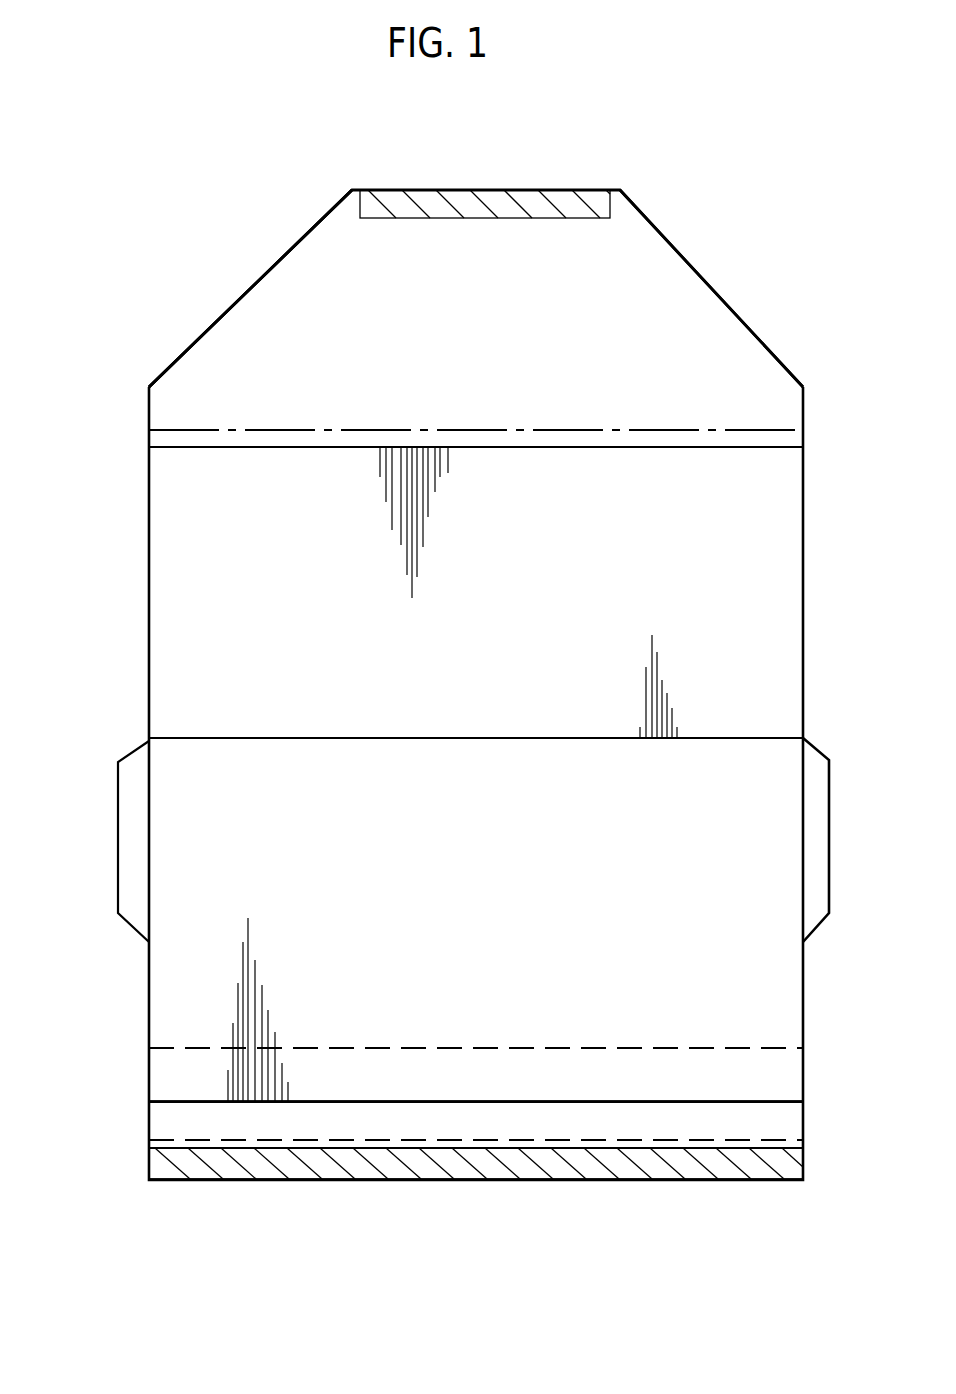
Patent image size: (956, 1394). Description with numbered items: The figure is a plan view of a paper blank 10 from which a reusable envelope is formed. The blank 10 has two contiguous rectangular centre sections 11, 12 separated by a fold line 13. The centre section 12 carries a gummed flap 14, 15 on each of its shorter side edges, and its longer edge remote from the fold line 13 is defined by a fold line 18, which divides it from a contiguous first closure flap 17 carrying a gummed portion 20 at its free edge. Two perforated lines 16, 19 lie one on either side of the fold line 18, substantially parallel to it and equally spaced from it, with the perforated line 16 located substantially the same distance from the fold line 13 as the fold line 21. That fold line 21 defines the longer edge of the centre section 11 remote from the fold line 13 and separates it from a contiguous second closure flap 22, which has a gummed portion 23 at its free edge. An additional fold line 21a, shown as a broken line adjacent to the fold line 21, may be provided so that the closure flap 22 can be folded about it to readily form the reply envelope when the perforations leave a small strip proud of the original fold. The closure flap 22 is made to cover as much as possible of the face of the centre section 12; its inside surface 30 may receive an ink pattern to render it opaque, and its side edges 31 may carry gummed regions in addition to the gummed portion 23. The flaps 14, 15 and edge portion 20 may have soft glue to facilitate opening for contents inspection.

The paper blank 10 is at (124, 559).
The centre section 11 is at (785, 600).
The centre section 12 is at (780, 1008).
The fold line 13 is at (772, 737).
The gummed flap 14 is at (825, 865).
The gummed flap 15 is at (132, 790).
The perforated line 16 is at (680, 1048).
The first closure flap 17 is at (332, 1127).
The fold line 18 is at (180, 1102).
The perforated line 19 is at (750, 1137).
The gummed portion 20 is at (737, 1163).
The fold line 21 is at (680, 447).
The additional fold line 21a is at (267, 430).
The second closure flap 22 is at (655, 318).
The gummed portion 23 is at (558, 202).
The inside surface 30 is at (288, 310).
The side edges 31 is at (328, 228).